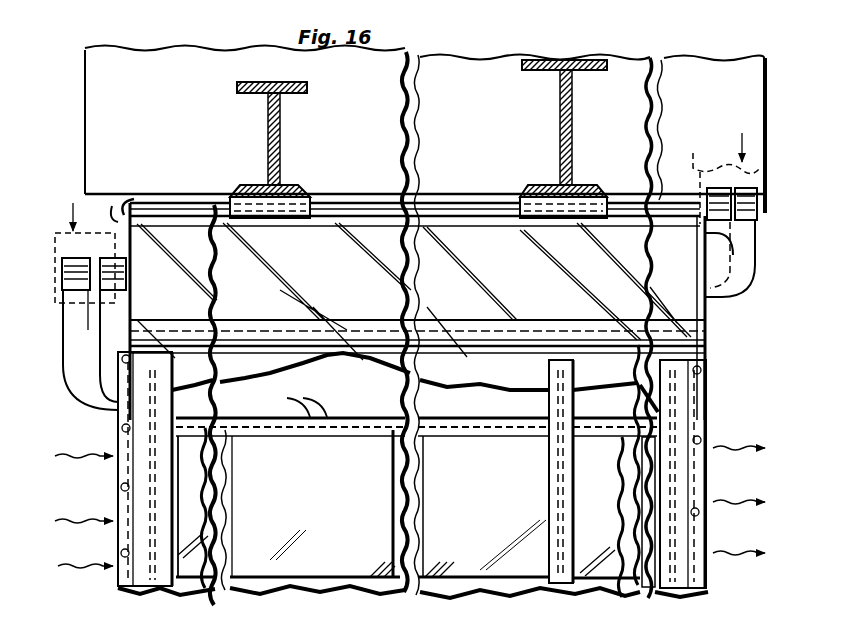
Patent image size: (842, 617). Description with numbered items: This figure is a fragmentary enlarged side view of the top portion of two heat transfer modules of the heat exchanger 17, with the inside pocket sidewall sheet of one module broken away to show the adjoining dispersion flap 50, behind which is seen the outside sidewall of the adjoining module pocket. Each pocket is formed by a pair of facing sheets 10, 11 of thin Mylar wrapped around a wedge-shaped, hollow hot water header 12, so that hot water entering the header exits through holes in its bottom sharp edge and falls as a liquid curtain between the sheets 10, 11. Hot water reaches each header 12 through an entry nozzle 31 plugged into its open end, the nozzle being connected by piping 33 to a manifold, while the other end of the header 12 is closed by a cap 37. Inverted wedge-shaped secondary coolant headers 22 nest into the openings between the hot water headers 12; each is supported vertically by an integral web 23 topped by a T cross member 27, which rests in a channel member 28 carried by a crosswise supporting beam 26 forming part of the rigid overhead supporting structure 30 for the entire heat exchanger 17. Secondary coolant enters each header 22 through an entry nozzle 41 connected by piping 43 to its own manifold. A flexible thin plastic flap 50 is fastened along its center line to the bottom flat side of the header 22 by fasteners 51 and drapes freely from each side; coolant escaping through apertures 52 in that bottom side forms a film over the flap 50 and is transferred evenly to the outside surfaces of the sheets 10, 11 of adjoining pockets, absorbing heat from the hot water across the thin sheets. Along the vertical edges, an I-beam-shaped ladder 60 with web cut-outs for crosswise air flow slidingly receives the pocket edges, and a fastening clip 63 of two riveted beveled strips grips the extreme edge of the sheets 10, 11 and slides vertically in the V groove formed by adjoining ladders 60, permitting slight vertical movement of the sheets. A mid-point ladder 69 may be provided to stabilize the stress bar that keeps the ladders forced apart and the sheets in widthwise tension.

The facing sheet 10 is at (462, 342).
The facing sheet 11 is at (340, 598).
The hot water header 12 is at (512, 272).
The heat exchanger 17 is at (716, 334).
The secondary coolant header 22 is at (348, 388).
The web 23 is at (362, 232).
The supporting beam 26 is at (282, 132).
The T cross member 27 is at (170, 215).
The channel member 28 is at (290, 220).
The overhead supporting structure 30 is at (508, 138).
The entry nozzle 31 is at (85, 324).
The piping 33 is at (90, 253).
The cap 37 is at (131, 203).
The entry nozzle 41 is at (730, 280).
The piping 43 is at (724, 175).
The flap 50 is at (248, 590).
The fastener 51 is at (353, 428).
The aperture 52 is at (287, 397).
The beam-shaped ladder 60 is at (156, 594).
The fastening clip 63 is at (710, 386).
The mid-point ladder 69 is at (549, 468).